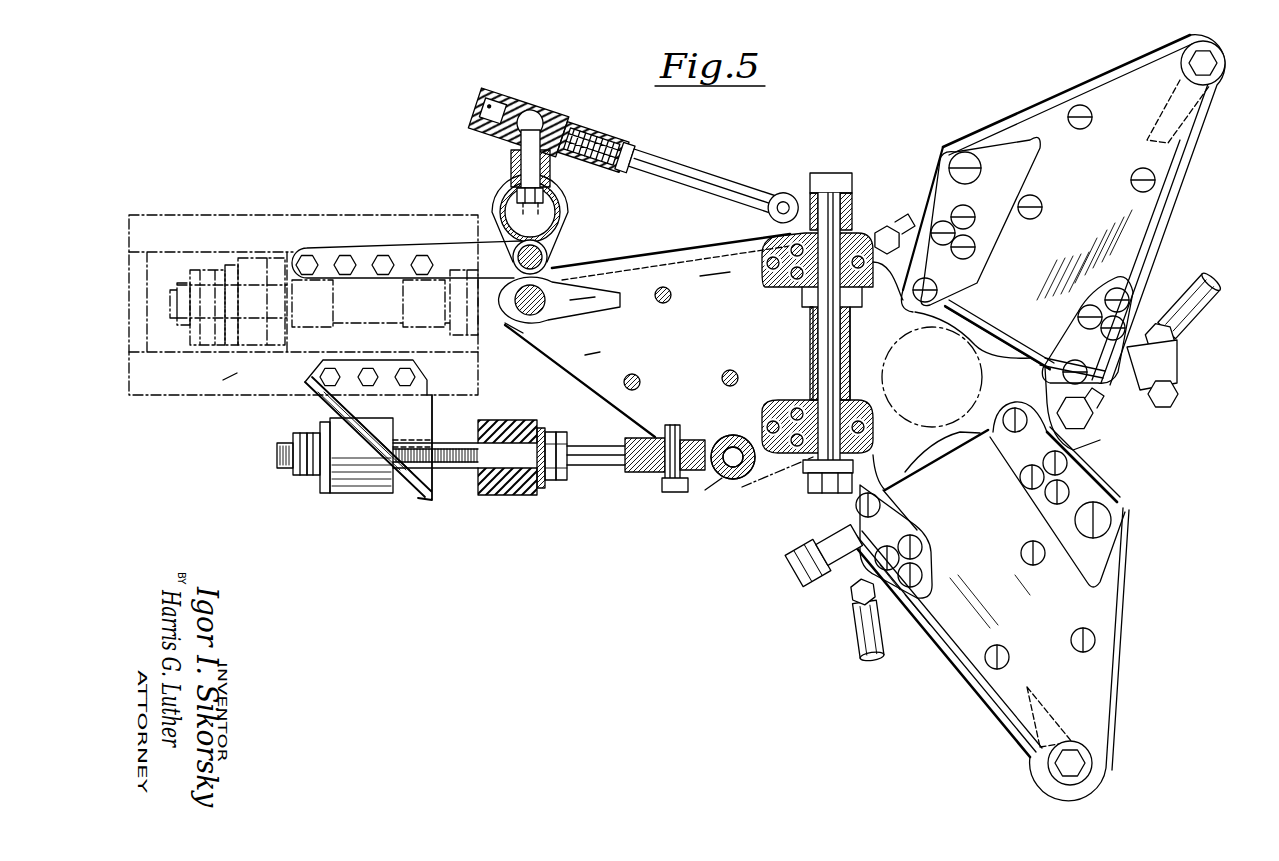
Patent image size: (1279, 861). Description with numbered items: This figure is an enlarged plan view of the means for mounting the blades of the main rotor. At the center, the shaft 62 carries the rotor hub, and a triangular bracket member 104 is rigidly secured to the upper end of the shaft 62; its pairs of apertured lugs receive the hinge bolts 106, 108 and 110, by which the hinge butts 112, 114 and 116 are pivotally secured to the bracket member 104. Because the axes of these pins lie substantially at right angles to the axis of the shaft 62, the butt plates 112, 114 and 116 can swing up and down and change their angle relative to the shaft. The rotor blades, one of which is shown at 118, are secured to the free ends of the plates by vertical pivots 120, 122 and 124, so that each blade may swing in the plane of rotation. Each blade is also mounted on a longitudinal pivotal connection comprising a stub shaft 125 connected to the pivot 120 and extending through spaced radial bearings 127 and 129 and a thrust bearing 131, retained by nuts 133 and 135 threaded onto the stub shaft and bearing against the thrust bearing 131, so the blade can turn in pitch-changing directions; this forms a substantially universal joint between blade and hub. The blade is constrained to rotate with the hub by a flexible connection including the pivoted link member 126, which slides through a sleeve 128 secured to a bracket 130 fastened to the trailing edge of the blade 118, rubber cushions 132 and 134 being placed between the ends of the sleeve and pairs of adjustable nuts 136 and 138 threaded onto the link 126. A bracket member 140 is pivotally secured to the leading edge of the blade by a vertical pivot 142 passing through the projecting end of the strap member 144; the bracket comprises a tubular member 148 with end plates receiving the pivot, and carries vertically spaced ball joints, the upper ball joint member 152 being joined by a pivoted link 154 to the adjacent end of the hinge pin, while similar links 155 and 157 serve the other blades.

The shaft 62 is at (932, 328).
The triangular bracket member 104 is at (905, 225).
The hinge bolt 106 is at (830, 172).
The hinge bolt 108 is at (1170, 408).
The hinge bolt 110 is at (795, 575).
The hinge butt 112 is at (663, 256).
The hinge butt 114 is at (1014, 114).
The hinge butt 116 is at (950, 668).
The rotor blade 118 is at (305, 215).
The vertical pivot 120 is at (527, 327).
The vertical pivot 122 is at (1212, 72).
The vertical pivot 124 is at (1078, 763).
The stub shaft 125 is at (180, 290).
The pivoted link member 126 is at (612, 466).
The radial bearing 127 is at (405, 303).
The sleeve 128 is at (460, 470).
The radial bearing 129 is at (330, 298).
The bracket 130 is at (418, 490).
The thrust bearing 131 is at (262, 258).
The rubber cushion 132 is at (518, 496).
The nut 133 is at (205, 272).
The rubber cushion 134 is at (362, 494).
The nut 135 is at (232, 268).
The adjustable nuts 136 is at (560, 482).
The adjustable nuts 138 is at (302, 478).
The bracket member 140 is at (500, 188).
The vertical pivot 142 is at (552, 255).
The strap member 144 is at (450, 242).
The tubular member 148 is at (560, 212).
The upper ball joint member 152 is at (538, 118).
The pivoted link 154 is at (688, 172).
The link 155 is at (1200, 300).
The link 157 is at (855, 650).